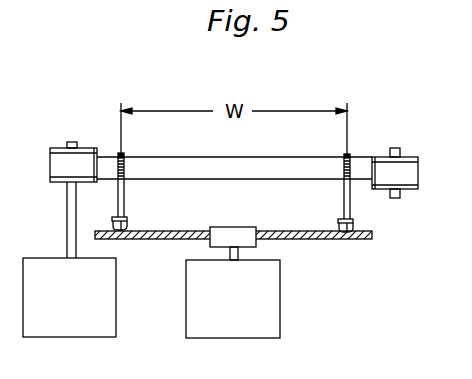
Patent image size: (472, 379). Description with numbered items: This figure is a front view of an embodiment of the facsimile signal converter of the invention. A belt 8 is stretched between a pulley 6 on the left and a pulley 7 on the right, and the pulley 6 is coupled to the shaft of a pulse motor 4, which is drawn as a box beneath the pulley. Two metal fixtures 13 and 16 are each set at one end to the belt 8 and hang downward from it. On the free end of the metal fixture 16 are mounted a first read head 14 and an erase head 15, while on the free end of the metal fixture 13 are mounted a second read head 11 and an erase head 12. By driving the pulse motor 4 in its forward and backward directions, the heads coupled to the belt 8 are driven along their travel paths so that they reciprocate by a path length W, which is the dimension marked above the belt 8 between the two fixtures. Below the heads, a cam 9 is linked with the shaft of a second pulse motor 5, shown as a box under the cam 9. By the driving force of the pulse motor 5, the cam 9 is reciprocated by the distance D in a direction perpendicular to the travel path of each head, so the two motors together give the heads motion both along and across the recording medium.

The pulse motor 4 is at (117, 298).
The pulse motor 5 is at (280, 303).
The pulley 6 is at (85, 147).
The pulley 7 is at (412, 156).
The belt 8 is at (279, 156).
The cam 9 is at (233, 226).
The second read head 11 is at (355, 228).
The erase head 12 is at (338, 225).
The metal fixture 13 is at (350, 203).
The first read head 14 is at (128, 221).
The erase head 15 is at (112, 222).
The metal fixture 16 is at (124, 194).